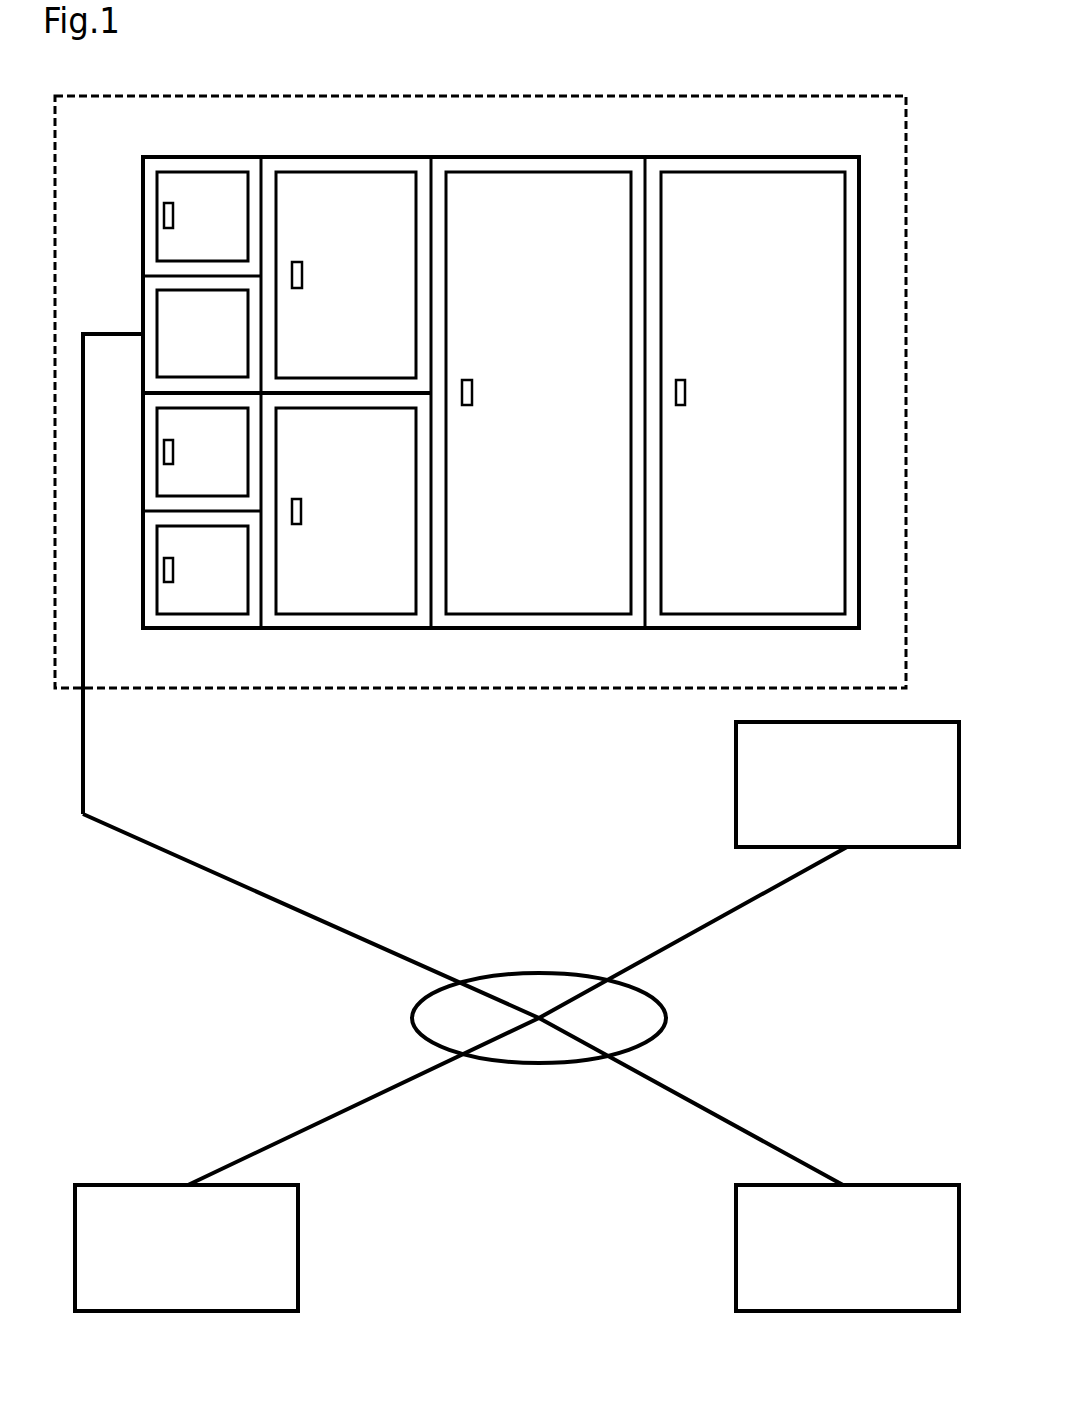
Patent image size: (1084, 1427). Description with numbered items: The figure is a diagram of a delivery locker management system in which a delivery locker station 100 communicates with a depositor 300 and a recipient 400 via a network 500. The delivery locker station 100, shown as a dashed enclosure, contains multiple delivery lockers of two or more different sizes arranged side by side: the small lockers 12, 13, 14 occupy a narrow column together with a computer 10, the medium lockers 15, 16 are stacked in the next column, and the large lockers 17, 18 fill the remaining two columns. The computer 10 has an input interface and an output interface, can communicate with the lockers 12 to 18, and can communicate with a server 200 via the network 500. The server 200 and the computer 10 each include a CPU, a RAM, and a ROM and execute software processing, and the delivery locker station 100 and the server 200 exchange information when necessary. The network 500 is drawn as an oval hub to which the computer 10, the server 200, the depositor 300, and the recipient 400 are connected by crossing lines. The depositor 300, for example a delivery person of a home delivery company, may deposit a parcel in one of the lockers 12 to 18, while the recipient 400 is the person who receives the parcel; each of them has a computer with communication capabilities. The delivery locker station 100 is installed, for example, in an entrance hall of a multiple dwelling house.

The delivery locker station 100 is at (740, 96).
The computer 10 is at (168, 308).
The small locker 12 is at (168, 243).
The small locker 13 is at (168, 478).
The small locker 14 is at (168, 596).
The medium locker 15 is at (330, 183).
The medium locker 16 is at (333, 600).
The large locker 17 is at (546, 183).
The large locker 18 is at (759, 183).
The server 200 is at (736, 762).
The depositor 300 is at (298, 1228).
The recipient 400 is at (736, 1228).
The network 500 is at (422, 998).